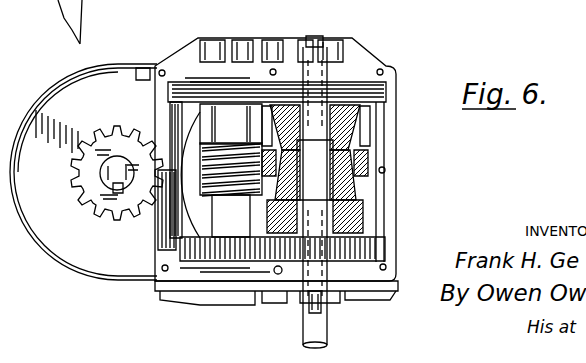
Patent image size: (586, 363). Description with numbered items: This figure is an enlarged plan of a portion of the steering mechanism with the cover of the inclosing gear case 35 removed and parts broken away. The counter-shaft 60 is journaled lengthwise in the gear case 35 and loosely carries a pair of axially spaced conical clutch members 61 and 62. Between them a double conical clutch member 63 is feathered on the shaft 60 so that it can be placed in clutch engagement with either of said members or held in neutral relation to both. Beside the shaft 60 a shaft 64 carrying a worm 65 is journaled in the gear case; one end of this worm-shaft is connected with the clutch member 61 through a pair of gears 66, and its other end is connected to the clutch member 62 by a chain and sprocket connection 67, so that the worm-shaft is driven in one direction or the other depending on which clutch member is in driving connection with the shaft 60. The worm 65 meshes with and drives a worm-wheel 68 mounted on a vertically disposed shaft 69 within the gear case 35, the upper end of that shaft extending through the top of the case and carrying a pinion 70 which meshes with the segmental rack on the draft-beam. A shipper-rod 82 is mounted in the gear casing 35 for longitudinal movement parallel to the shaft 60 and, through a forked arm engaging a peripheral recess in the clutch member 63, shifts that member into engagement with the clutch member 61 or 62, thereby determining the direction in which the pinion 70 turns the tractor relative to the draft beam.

The gear case 35 is at (377, 190).
The counter-shaft 60 is at (323, 332).
The conical clutch member 61 is at (350, 230).
The conical clutch member 62 is at (358, 102).
The double conical clutch member 63 is at (358, 148).
The shaft 64 is at (231, 216).
The worm 65 is at (218, 178).
The pair of gears 66 is at (303, 260).
The chain and sprocket connection 67 is at (257, 92).
The worm-wheel 68 is at (175, 202).
The shaft 69 is at (115, 163).
The pinion 70 is at (90, 180).
The shipper-rod 82 is at (328, 308).